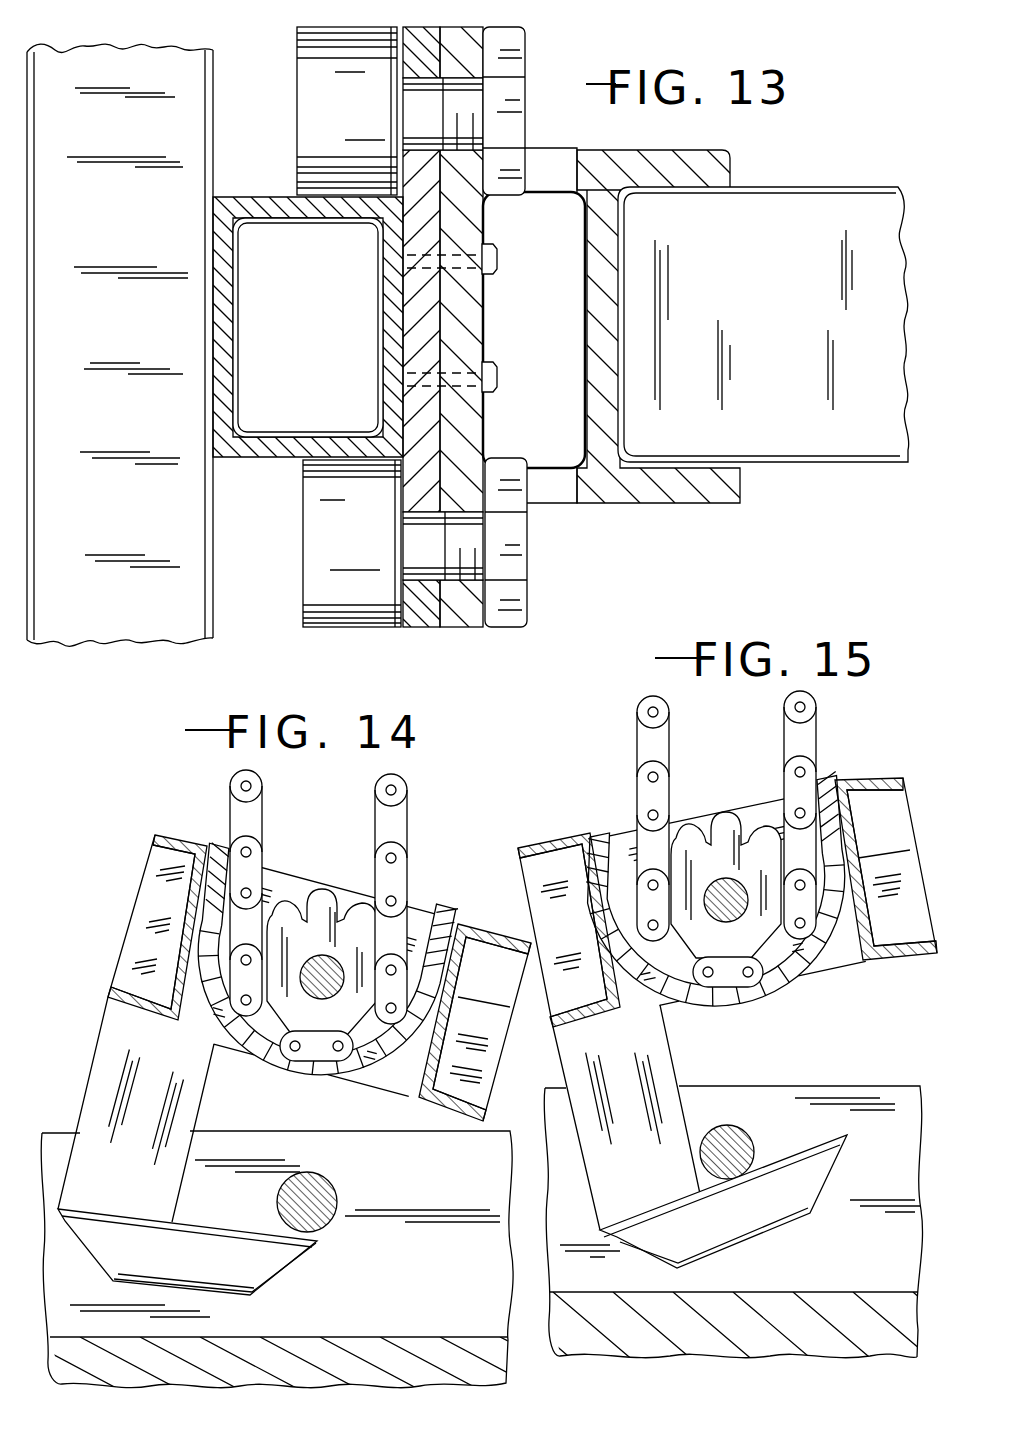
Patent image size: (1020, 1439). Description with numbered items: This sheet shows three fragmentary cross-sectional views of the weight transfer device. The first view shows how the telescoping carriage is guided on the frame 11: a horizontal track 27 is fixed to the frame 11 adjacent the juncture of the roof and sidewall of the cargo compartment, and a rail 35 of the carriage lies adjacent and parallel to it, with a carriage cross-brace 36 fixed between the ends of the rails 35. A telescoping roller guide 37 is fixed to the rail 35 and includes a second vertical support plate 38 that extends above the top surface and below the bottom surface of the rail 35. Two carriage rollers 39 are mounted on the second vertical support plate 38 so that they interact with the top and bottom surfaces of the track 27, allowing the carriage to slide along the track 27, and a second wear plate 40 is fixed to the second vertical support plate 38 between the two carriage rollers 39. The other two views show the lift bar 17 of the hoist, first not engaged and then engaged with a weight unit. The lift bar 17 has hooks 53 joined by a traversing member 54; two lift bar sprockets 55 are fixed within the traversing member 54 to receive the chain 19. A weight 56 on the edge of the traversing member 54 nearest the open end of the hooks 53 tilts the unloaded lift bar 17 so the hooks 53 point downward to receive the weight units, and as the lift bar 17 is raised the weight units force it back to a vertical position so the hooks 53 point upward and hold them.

In FIG. 13, the frame 11 is at (110, 655).
In FIG. 14, the lift bar 17 is at (446, 897).
In FIG. 15, the lift bar 17 is at (890, 761).
In FIG. 14, the chains 19 is at (413, 818).
In FIG. 15, the chains 19 is at (812, 745).
In FIG. 13, the tracks 27 is at (305, 329).
In FIG. 13, the rails 35 is at (690, 150).
In FIG. 13, the carriage cross-braces 36 is at (788, 297).
In FIG. 13, the telescoping roller guide 37 is at (542, 158).
In FIG. 13, the second vertical support plate 38 is at (458, 26).
In FIG. 13, the carriage rollers 39 is at (298, 118).
In FIG. 13, the second wear plate 40 is at (405, 340).
In FIG. 14, the hooks 53 is at (296, 1262).
In FIG. 15, the hooks 53 is at (783, 1222).
In FIG. 14, the traversing member 54 is at (137, 907).
In FIG. 15, the traversing member 54 is at (908, 962).
In FIG. 14, the lift bar sprockets 55 is at (306, 910).
In FIG. 15, the lift bar sprockets 55 is at (713, 826).
In FIG. 14, the weight 56 is at (487, 985).
In FIG. 15, the weight 56 is at (898, 833).